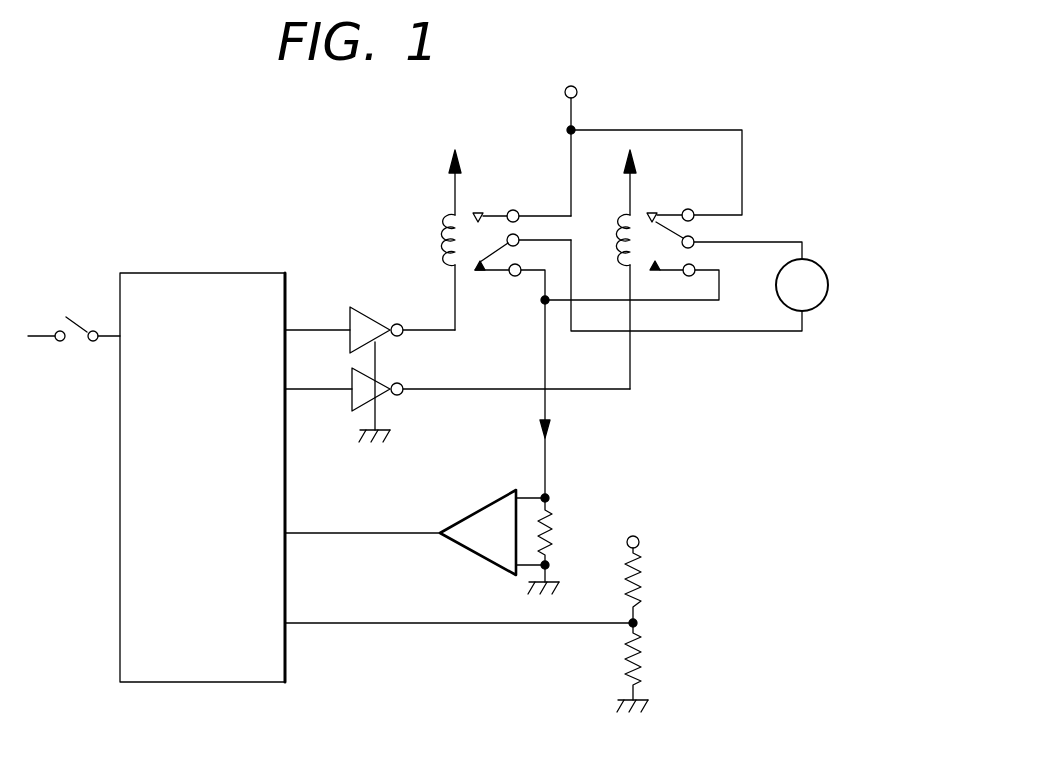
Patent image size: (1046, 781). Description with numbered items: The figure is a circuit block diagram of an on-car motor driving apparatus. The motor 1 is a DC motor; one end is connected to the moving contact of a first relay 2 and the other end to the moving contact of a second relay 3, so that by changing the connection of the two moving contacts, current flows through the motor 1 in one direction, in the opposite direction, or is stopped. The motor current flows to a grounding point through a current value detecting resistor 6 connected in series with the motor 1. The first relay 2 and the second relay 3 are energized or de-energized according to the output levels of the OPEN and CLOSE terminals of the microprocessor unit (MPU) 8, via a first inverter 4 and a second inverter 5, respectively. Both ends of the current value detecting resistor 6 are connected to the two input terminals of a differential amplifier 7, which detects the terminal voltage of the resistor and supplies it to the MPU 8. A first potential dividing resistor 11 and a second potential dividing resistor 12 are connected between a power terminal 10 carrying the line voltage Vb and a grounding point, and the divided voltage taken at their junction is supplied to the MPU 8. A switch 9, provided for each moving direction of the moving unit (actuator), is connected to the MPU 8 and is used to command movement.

The motor 1 is at (829, 287).
The first relay 2 is at (473, 211).
The second relay 3 is at (674, 213).
The first inverter 4 is at (370, 317).
The second inverter 5 is at (382, 378).
The current value detecting resistor 6 is at (552, 532).
The differential amplifier 7 is at (485, 507).
The microprocessor unit (MPU) 8 is at (287, 278).
The switch 9 is at (73, 340).
The power terminal 10 is at (577, 89).
The first potential dividing resistor 11 is at (640, 582).
The second potential dividing resistor 12 is at (640, 673).